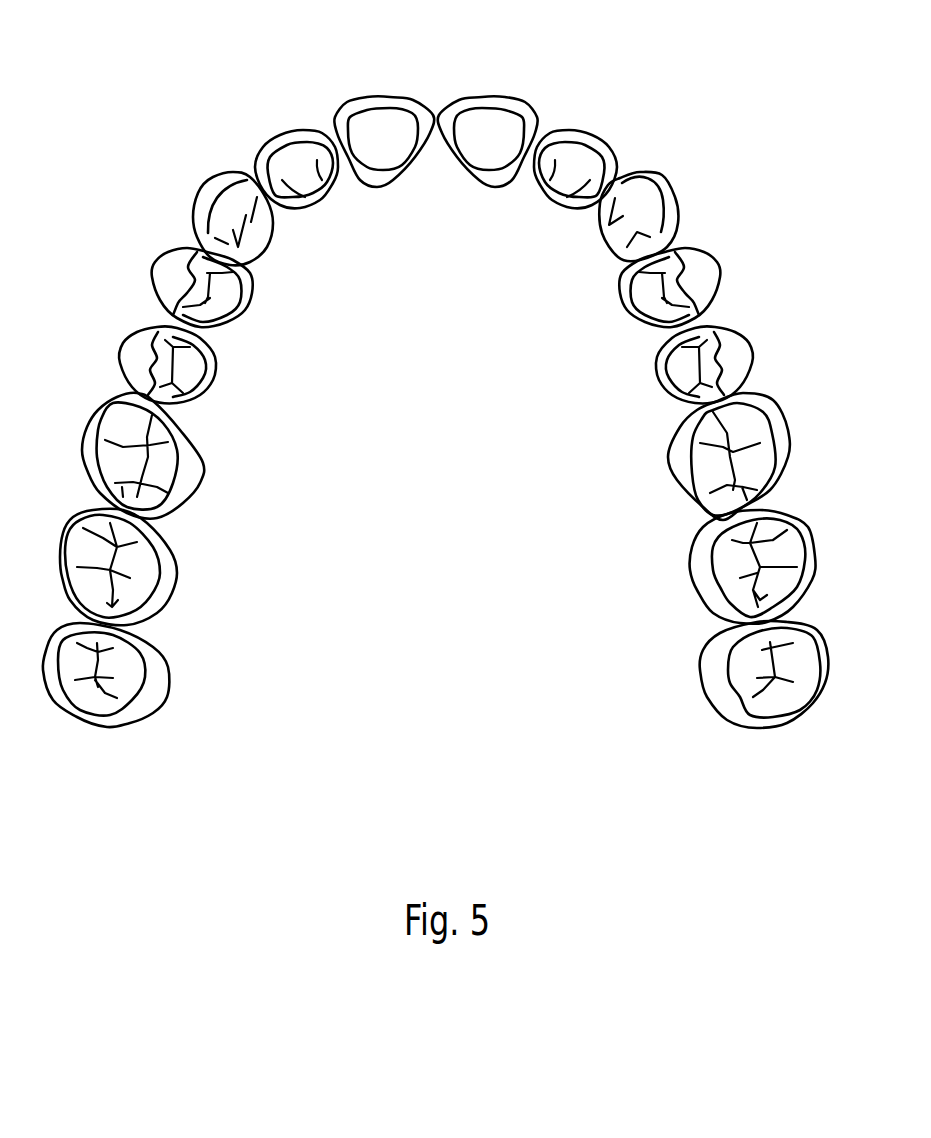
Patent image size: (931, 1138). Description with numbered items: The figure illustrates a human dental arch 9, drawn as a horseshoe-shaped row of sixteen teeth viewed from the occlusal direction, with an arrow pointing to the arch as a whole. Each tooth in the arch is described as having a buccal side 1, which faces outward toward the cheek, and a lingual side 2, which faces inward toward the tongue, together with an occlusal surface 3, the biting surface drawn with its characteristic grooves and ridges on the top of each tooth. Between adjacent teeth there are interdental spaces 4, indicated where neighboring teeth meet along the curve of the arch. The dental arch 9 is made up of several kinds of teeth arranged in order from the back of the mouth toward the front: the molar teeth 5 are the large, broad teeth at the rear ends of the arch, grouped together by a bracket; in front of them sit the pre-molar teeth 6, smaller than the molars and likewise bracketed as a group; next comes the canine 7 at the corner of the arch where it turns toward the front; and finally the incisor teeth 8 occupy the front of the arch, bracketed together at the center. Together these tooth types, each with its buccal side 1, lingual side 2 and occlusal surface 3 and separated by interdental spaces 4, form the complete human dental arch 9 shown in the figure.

The buccal side 1 is at (201, 181).
The lingual side 2 is at (268, 256).
The occlusal surface 3 is at (190, 370).
The interdental spaces 4 is at (237, 302).
The molar teeth 5 is at (625, 577).
The pre-molar teeth 6 is at (772, 317).
The canine 7 is at (666, 184).
The incisor teeth 8 is at (545, 85).
The human dental arch 9 is at (272, 62).